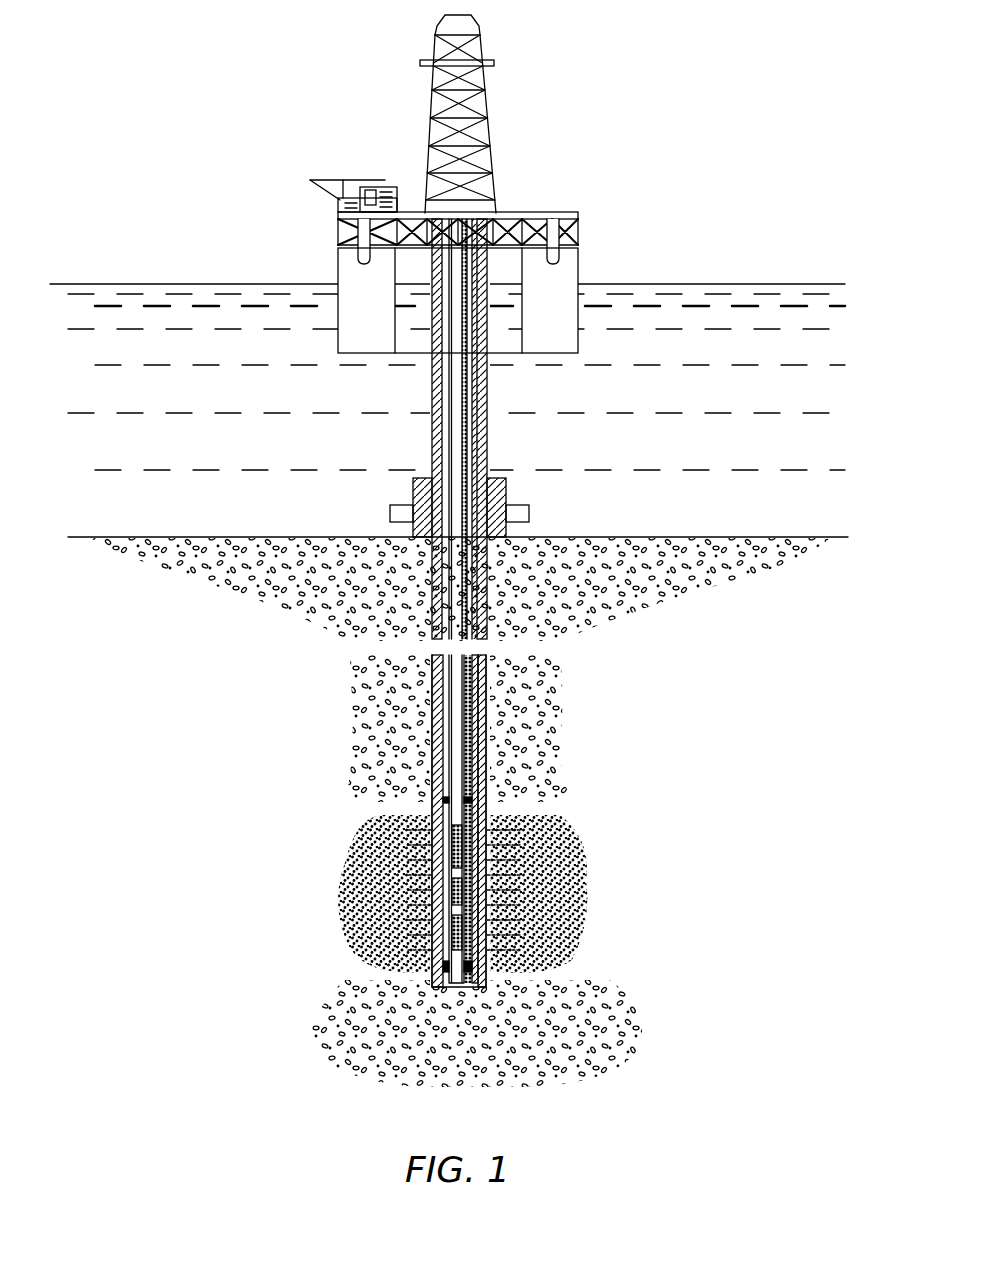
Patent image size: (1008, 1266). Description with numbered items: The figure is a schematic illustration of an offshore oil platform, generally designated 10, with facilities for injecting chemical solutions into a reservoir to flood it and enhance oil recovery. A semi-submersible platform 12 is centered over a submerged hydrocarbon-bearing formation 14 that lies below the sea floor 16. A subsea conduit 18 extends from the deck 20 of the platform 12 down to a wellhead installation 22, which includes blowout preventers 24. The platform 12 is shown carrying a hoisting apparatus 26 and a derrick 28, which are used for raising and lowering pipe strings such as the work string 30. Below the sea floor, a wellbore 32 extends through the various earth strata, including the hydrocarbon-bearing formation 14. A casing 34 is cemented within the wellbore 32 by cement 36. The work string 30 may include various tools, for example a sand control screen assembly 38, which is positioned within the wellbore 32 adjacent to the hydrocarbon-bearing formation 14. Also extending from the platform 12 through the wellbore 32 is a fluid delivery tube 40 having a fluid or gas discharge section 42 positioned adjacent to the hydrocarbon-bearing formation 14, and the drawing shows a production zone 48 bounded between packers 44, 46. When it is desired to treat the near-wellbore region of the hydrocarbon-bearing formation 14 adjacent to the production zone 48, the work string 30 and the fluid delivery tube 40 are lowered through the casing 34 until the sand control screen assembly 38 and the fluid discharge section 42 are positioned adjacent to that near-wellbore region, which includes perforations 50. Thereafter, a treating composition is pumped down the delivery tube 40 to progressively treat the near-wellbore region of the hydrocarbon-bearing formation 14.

The offshore oil platform 10 is at (268, 110).
The semi-submersible platform 12 is at (575, 213).
The hydrocarbon-bearing formation 14 is at (360, 873).
The sea floor 16 is at (698, 540).
The subsea conduit 18 is at (432, 440).
The deck 20 is at (578, 247).
The wellhead installation 22 is at (414, 496).
The blowout preventers 24 is at (530, 513).
The hoisting apparatus 26 is at (474, 194).
The derrick 28 is at (482, 50).
The work string 30 is at (472, 437).
The wellbore 32 is at (487, 707).
The casing 34 is at (446, 716).
The cement 36 is at (487, 733).
The sand control screen assembly 38 is at (446, 897).
The fluid delivery tube 40 is at (473, 760).
The fluid discharge section 42 is at (482, 956).
The packer 44 is at (478, 800).
The packer 46 is at (488, 968).
The production zone 48 is at (481, 823).
The perforations 50 is at (440, 935).